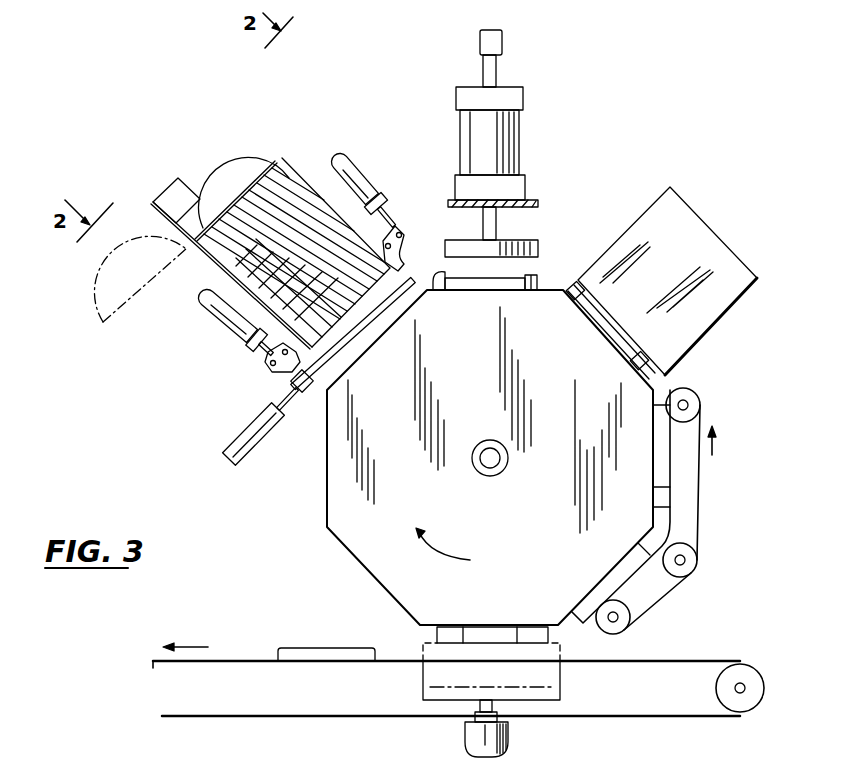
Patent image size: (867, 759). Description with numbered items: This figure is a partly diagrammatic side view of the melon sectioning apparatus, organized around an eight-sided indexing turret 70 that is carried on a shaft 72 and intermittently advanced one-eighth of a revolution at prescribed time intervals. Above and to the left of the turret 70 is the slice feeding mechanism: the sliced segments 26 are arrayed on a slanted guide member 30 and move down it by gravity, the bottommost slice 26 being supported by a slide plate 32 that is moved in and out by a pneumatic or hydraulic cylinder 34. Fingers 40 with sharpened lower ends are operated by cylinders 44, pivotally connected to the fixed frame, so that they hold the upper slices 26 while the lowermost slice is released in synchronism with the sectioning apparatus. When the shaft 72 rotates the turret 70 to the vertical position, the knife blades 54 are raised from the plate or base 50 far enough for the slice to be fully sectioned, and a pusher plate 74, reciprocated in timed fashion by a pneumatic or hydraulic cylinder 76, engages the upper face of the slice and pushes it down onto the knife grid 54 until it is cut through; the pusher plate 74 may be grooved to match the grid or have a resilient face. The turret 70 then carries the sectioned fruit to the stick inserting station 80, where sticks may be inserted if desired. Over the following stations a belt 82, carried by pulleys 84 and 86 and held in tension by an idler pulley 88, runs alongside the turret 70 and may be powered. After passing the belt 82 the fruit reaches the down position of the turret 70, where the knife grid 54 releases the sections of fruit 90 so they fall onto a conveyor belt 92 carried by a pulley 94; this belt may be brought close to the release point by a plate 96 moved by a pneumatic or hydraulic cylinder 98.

The sliced segment 26 is at (288, 172).
The slanted guide member 30 is at (165, 190).
The slide plate 32 is at (345, 327).
The pneumatic or hydraulic cylinder 34 is at (232, 442).
The fingers 40 is at (398, 235).
The pneumatic or hydraulic cylinder 44 is at (358, 176).
The plate or base 50 is at (428, 292).
The knife blades 54 is at (513, 290).
The indexing turret 70 is at (352, 551).
The shaft 72 is at (507, 460).
The pusher plate 74 is at (538, 245).
The pneumatic or hydraulic cylinder 76 is at (520, 147).
The stick inserting station 80 is at (757, 278).
The belt 82 is at (705, 487).
The pulley 84 is at (700, 403).
The pulley 86 is at (635, 618).
The idler pulley 88 is at (697, 563).
The sections of fruit 90 is at (285, 648).
The conveyor belt 92 is at (250, 662).
The pulley 94 is at (762, 680).
The plate 96 is at (560, 672).
The pneumatic or hydraulic cylinder 98 is at (508, 740).